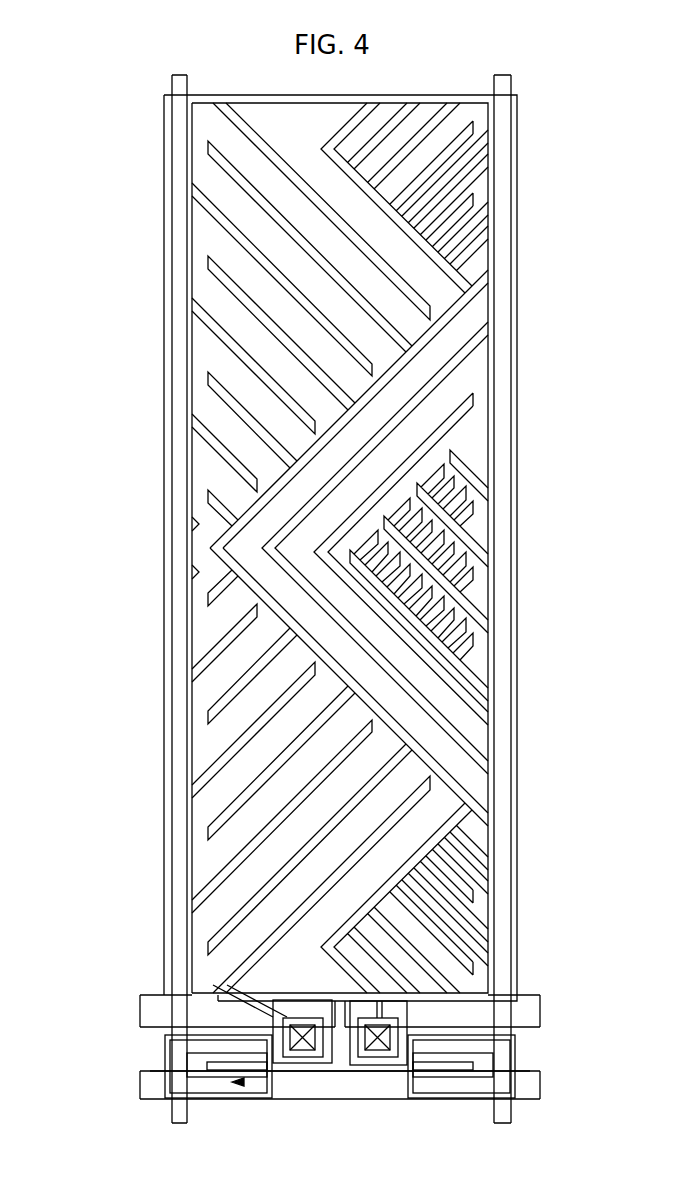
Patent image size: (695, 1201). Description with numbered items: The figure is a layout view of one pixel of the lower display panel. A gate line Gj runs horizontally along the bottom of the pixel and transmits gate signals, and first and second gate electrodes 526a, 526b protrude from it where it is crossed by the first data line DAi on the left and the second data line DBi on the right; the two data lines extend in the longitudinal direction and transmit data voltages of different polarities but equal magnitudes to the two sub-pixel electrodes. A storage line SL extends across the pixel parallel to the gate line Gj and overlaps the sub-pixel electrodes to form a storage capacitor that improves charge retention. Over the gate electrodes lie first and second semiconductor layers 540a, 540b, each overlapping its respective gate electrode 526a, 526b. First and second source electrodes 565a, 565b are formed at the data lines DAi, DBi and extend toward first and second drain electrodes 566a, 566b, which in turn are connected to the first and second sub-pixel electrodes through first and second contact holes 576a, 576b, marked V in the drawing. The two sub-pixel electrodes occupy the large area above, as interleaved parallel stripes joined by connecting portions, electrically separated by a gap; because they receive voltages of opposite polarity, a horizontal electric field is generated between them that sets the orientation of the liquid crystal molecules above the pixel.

The first data line DAi is at (171, 571).
The second data line DBi is at (512, 571).
The storage line SL is at (176, 1000).
The first contact hole 576a is at (141, 997).
The second contact hole 576b is at (539, 997).
The first gate electrode 526a is at (165, 1034).
The second gate electrode 526b is at (515, 1034).
The first source electrode 565a is at (166, 1050).
The second source electrode 565b is at (514, 1050).
The first drain electrode 566a is at (172, 1068).
The second drain electrode 566b is at (508, 1068).
The first semiconductor layer 540a is at (141, 1087).
The second semiconductor layer 540b is at (539, 1087).
The gate line Gj is at (162, 1100).
The contact hole V is at (318, 1035).